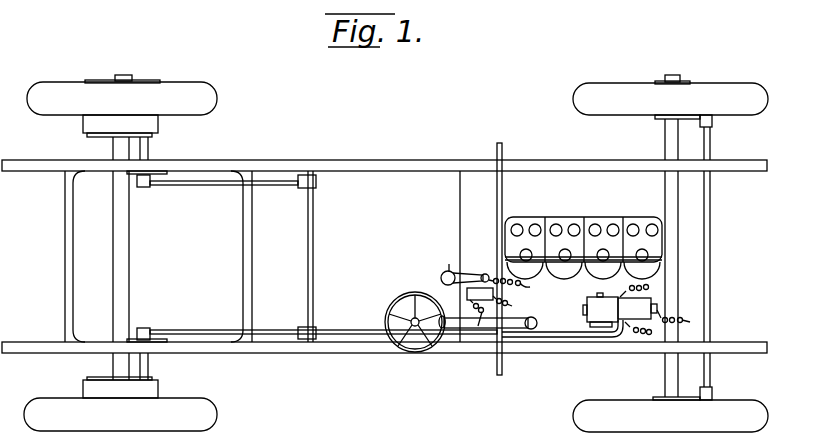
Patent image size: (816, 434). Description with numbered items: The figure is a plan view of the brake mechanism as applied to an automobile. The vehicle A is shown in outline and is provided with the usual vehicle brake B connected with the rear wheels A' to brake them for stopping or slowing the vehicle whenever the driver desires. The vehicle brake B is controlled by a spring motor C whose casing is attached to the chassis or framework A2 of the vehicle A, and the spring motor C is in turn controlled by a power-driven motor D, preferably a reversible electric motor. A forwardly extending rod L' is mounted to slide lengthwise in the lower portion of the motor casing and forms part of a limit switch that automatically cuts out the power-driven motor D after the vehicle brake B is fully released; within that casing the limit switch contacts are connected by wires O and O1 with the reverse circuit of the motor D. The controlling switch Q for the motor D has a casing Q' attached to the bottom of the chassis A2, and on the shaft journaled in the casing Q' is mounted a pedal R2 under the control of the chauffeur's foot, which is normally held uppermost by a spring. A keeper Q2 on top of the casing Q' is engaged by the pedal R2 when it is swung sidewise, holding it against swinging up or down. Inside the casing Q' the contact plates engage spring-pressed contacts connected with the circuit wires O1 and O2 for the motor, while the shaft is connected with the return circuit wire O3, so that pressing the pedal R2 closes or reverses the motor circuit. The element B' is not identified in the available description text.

The vehicle A is at (384, 249).
The rear wheels A' is at (137, 98).
The chassis or framework A2 is at (407, 172).
The vehicle brake B is at (132, 237).
The steering rod B' is at (323, 317).
The spring motor C is at (587, 302).
The power-driven motor D is at (629, 322).
The rod L' is at (562, 351).
The controlling switch Q is at (479, 265).
The casing of controlling switch Q' is at (467, 300).
The keeper Q2 is at (453, 283).
The pedal R2 is at (448, 259).
The wire O is at (688, 323).
The wire O1 is at (509, 306).
The circuit wire O2 is at (568, 322).
The return circuit wire O3 is at (577, 286).